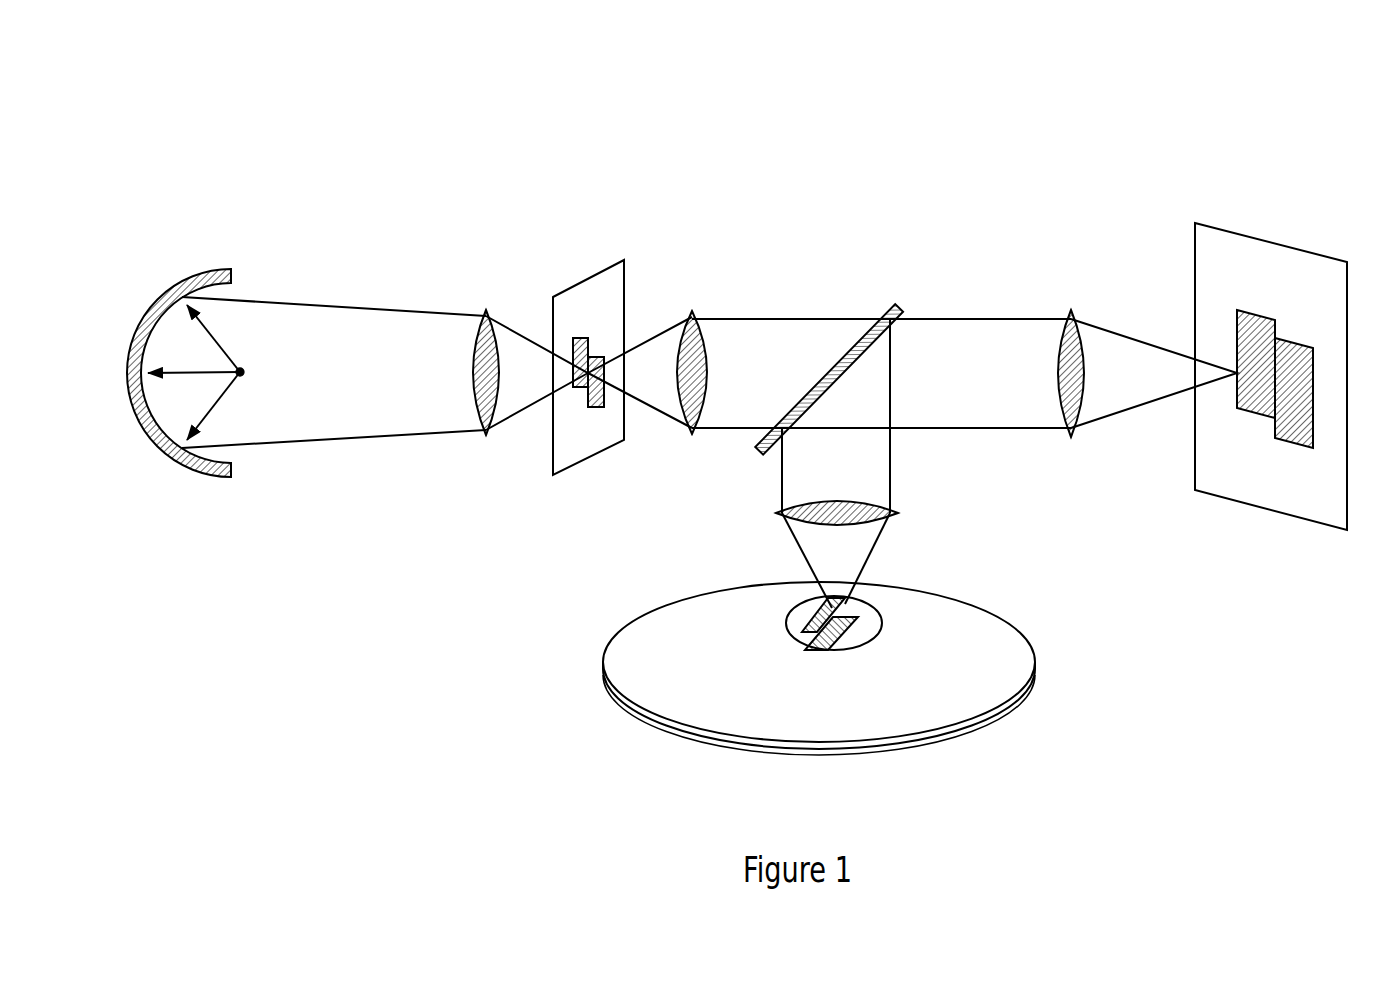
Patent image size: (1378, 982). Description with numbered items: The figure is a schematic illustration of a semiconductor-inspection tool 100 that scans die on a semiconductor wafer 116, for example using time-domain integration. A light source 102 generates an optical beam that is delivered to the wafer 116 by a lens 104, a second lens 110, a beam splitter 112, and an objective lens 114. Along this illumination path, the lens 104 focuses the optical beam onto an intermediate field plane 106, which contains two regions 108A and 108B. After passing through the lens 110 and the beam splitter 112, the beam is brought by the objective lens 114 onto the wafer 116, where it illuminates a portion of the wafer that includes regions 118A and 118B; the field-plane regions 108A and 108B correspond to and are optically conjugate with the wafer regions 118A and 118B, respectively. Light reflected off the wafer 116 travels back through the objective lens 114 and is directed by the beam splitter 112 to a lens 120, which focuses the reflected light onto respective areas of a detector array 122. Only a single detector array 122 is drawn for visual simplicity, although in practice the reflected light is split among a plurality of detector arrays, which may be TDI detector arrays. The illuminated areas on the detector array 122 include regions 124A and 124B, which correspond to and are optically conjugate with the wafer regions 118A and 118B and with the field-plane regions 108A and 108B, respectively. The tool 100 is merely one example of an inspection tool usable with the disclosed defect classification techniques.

The semiconductor-inspection tool 100 is at (368, 65).
The light source 102 is at (208, 267).
The lens 104 is at (486, 306).
The intermediate field plane 106 is at (567, 290).
The region 108A is at (578, 388).
The region 108B is at (596, 408).
The lens 110 is at (694, 308).
The beam splitter 112 is at (893, 305).
The objective lens 114 is at (775, 513).
The semiconductor wafer 116 is at (962, 598).
The region 118A is at (803, 625).
The region 118B is at (847, 638).
The lens 120 is at (1071, 306).
The detector array 122 is at (1250, 237).
The region 124A is at (1245, 310).
The region 124B is at (1293, 338).